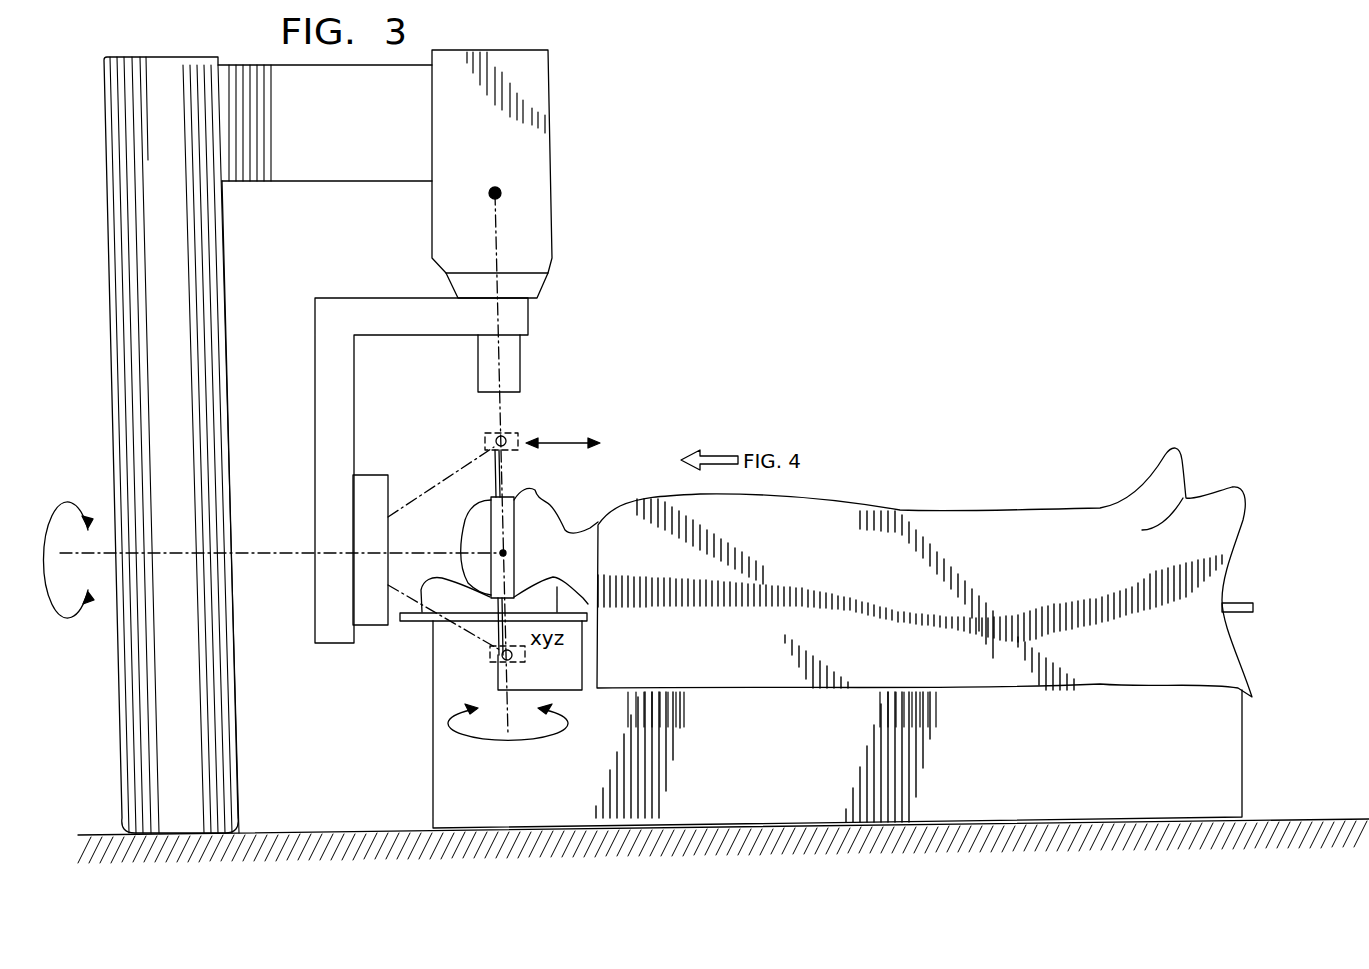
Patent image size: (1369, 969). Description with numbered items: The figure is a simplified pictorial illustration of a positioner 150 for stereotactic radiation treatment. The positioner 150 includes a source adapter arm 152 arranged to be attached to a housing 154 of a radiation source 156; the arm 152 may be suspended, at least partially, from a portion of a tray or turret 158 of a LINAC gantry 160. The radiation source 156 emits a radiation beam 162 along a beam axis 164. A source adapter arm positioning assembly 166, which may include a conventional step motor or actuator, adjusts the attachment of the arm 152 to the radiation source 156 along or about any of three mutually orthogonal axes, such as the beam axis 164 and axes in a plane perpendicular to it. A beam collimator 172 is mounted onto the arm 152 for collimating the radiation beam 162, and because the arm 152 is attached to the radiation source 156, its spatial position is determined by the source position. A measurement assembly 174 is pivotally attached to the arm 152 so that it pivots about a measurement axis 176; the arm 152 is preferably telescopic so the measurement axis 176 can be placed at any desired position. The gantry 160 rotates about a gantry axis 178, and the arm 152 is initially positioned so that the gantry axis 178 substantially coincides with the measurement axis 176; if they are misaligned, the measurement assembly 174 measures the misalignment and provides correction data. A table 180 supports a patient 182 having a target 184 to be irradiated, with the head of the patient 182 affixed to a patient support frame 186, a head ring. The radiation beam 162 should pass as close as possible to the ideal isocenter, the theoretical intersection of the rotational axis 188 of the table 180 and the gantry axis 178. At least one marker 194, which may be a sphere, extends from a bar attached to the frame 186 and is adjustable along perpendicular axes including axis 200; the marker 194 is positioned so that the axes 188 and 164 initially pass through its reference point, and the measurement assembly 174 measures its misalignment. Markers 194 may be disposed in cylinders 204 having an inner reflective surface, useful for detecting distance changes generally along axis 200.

The positioner 150 is at (298, 294).
The source adapter arm 152 is at (340, 357).
The housing 154 is at (290, 184).
The radiation source 156 is at (495, 187).
The tray or turret 158 is at (553, 168).
The LINAC gantry 160 is at (226, 440).
The radiation beam 162 is at (497, 228).
The beam axis 164 is at (500, 410).
The source adapter arm positioning assembly 166 is at (537, 285).
The beam collimator 172 is at (513, 360).
The measurement assembly 174 is at (376, 468).
The measurement axis 176 is at (410, 552).
The gantry axis 178 is at (97, 548).
The table 180 is at (1250, 603).
The patient 182 is at (940, 512).
The target 184 is at (506, 553).
The patient support frame 186 is at (514, 497).
The rotational axis 188 is at (483, 745).
The marker 194 is at (497, 658).
The axis 200 is at (578, 452).
The cylinders 204 is at (485, 441).